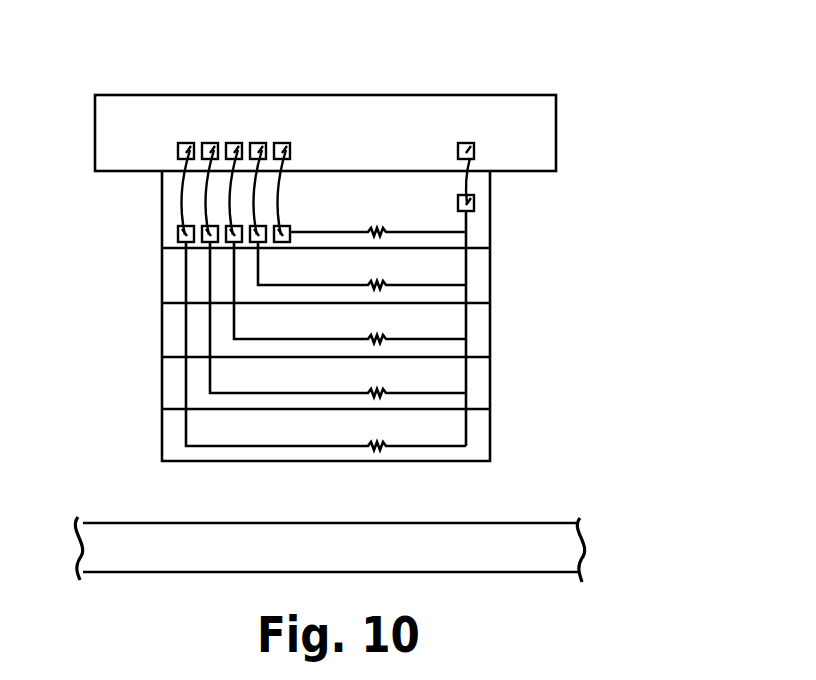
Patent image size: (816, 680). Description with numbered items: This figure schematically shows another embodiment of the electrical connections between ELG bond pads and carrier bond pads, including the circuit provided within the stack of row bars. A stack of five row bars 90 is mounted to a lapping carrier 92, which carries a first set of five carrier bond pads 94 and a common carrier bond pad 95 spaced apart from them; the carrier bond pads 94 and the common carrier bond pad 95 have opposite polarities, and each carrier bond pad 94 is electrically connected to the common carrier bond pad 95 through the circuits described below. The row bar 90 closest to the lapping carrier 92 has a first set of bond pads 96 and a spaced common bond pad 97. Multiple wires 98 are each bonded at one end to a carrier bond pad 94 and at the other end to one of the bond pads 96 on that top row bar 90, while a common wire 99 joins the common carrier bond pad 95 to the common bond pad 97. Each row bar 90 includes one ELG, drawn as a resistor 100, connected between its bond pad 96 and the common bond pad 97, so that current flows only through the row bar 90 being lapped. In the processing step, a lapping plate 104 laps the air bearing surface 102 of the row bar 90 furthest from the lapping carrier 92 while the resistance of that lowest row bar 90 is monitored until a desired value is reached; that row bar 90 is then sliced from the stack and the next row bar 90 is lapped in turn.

The row bar 90 is at (170, 209).
The lapping carrier 92 is at (529, 118).
The carrier bond pads 94 is at (188, 155).
The common carrier bond pad 95 is at (470, 156).
The bond pads 96 is at (178, 234).
The common bond pad 97 is at (474, 201).
The wires 98 is at (178, 192).
The common wire 99 is at (468, 180).
The resistor 100 is at (405, 447).
The air bearing surface 102 is at (201, 472).
The lapping plate 104 is at (553, 548).